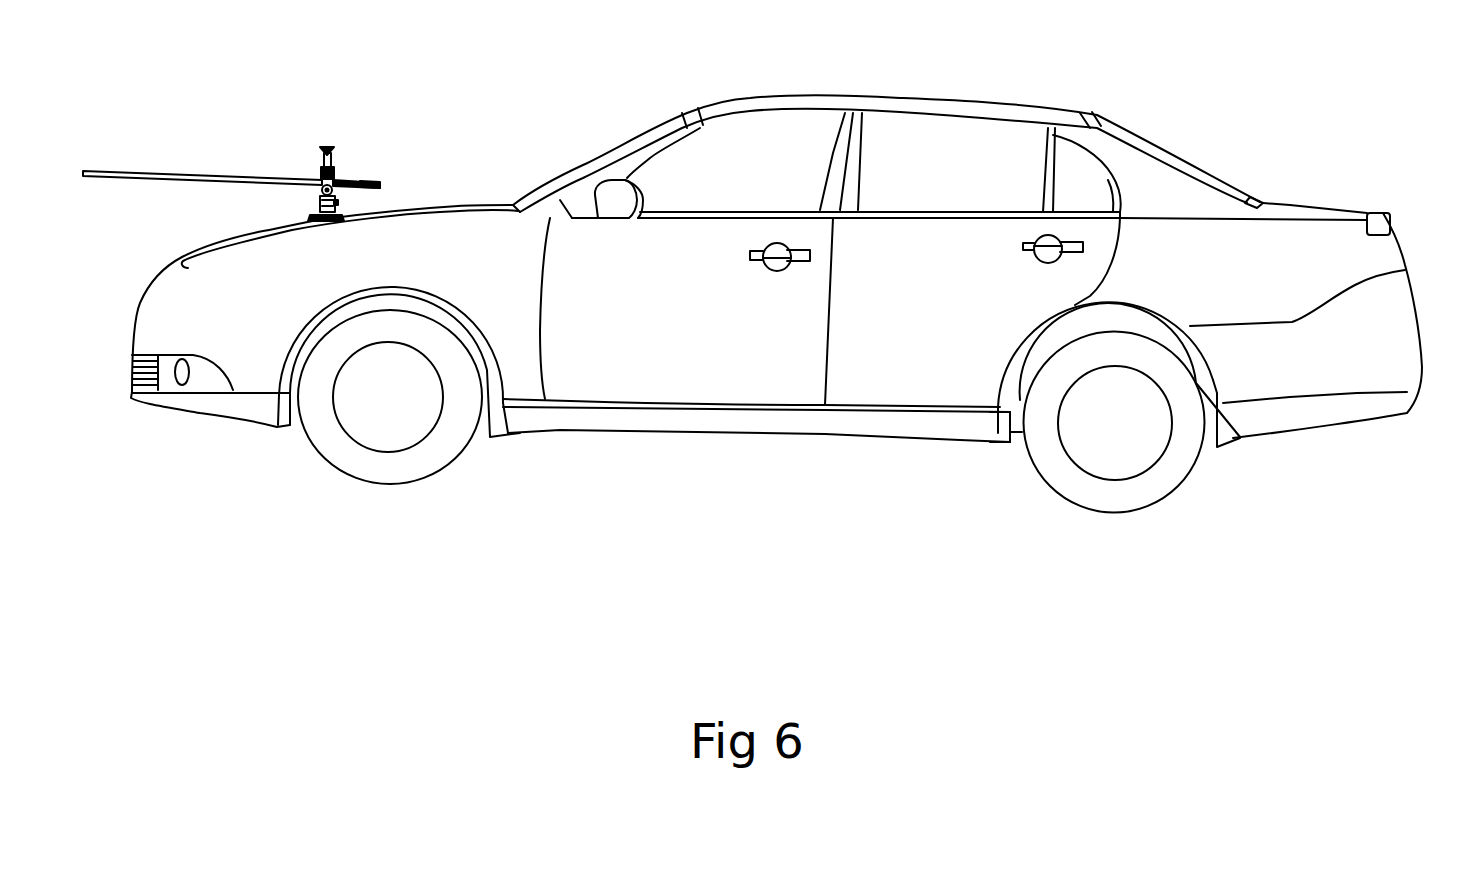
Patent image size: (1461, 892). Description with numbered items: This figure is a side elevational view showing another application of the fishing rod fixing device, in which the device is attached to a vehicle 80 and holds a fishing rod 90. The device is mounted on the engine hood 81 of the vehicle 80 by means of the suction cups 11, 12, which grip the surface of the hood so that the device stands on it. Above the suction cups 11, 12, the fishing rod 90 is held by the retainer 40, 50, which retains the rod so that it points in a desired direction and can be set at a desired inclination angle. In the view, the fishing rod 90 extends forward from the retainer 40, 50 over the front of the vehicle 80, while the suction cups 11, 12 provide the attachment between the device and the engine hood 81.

The suction cup 11 is at (231, 195).
The suction cup 12 is at (310, 216).
The retainer 40 is at (272, 166).
The retainer 50 is at (322, 172).
The vehicle 80 is at (717, 325).
The engine hood 81 is at (460, 208).
The fishing rod 90 is at (368, 178).